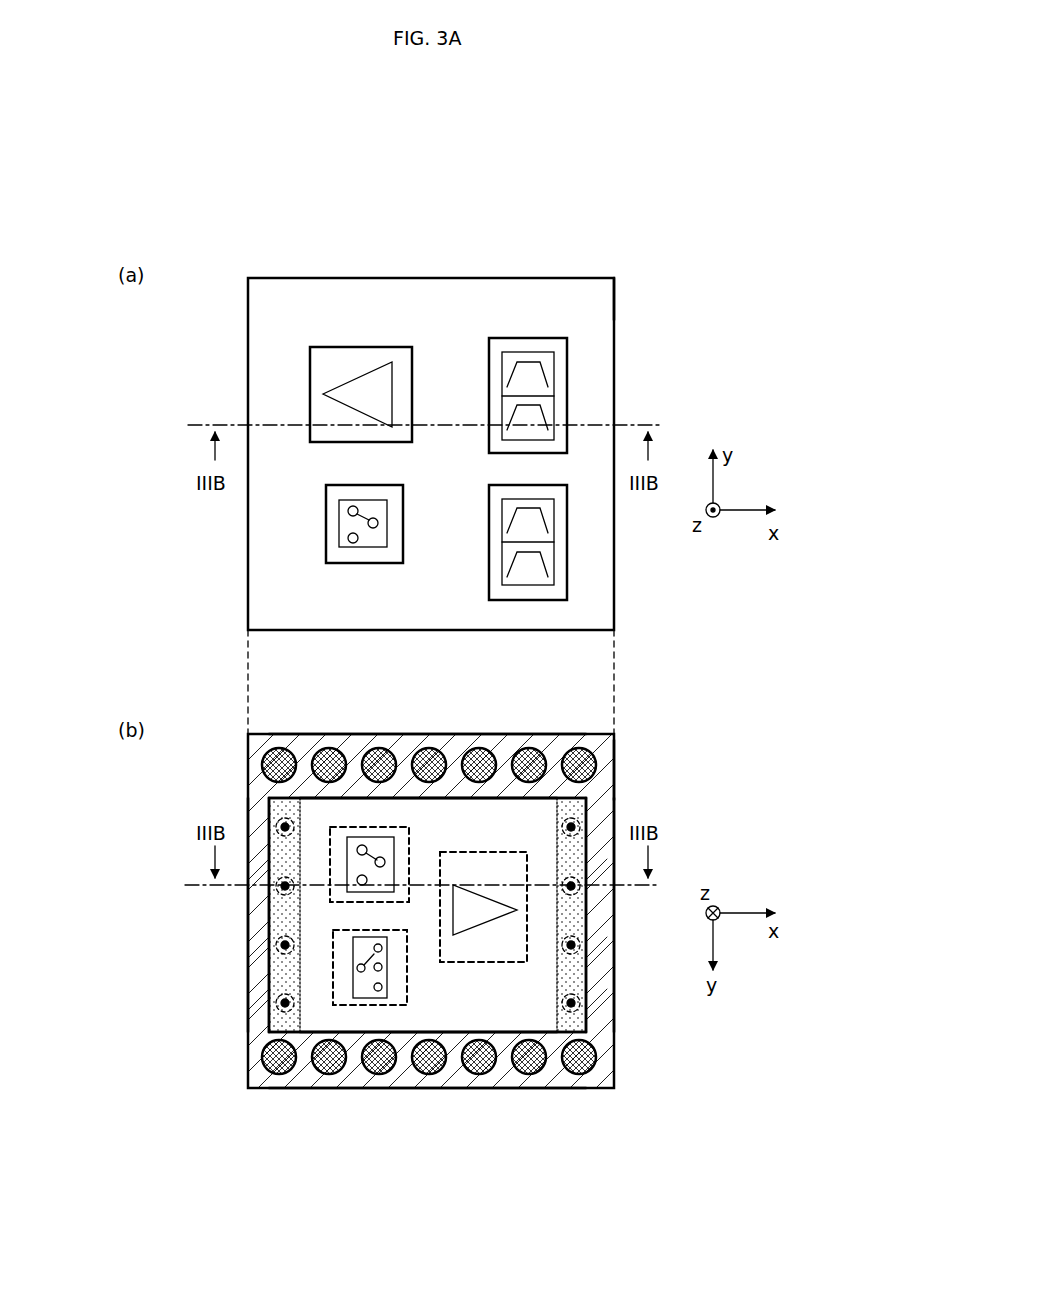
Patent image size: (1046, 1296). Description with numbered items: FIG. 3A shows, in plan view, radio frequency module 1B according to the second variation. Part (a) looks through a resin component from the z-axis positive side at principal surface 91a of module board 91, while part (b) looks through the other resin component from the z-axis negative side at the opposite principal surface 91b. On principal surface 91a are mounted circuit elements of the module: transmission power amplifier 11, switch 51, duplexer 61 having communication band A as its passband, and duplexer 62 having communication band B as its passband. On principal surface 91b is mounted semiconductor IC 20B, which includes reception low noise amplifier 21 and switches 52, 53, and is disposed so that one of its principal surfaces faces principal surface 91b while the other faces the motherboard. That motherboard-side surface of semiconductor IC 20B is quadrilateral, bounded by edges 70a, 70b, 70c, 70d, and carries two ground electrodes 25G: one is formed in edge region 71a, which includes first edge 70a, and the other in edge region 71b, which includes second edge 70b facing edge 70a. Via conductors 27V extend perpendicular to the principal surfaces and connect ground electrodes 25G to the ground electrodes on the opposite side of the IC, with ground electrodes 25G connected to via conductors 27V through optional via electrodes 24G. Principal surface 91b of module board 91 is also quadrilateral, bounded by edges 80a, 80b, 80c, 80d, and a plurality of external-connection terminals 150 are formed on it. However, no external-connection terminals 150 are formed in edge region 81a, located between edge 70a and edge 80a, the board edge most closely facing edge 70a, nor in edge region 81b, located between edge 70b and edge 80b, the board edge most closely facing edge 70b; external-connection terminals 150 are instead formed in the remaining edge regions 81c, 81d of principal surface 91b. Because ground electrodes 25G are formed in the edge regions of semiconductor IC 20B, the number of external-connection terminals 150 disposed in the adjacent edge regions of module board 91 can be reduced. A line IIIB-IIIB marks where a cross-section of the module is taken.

The radio frequency module 1B is at (700, 333).
The transmission power amplifier 11 is at (347, 347).
The reception low noise amplifier 21 is at (490, 964).
The switch 51 is at (338, 563).
The switch 52 is at (410, 838).
The switch 53 is at (407, 988).
The duplexer 61 is at (507, 338).
The duplexer 62 is at (507, 485).
The module board 91 is at (565, 276).
The principal surface 91a is at (600, 300).
The principal surface 91b is at (615, 768).
The semiconductor IC 20B is at (498, 796).
The external-connection terminals 150 is at (477, 750).
The edge 70a is at (262, 1000).
The edge 70b is at (590, 1014).
The edge 70c is at (352, 796).
The edge 70d is at (355, 1034).
The edge region 71a is at (280, 848).
The edge region 71b is at (580, 848).
The edge 80a is at (247, 1060).
The edge 80b is at (615, 1058).
The edge 80c is at (300, 734).
The edge 80d is at (296, 1088).
The edge region 81a is at (258, 936).
The edge region 81b is at (600, 968).
The third inner edge 81c is at (487, 742).
The fourth inner edge 81d is at (500, 1088).
The via electrodes 24G is at (286, 946).
The ground electrodes 25G is at (270, 905).
The via conductors 27V is at (290, 964).